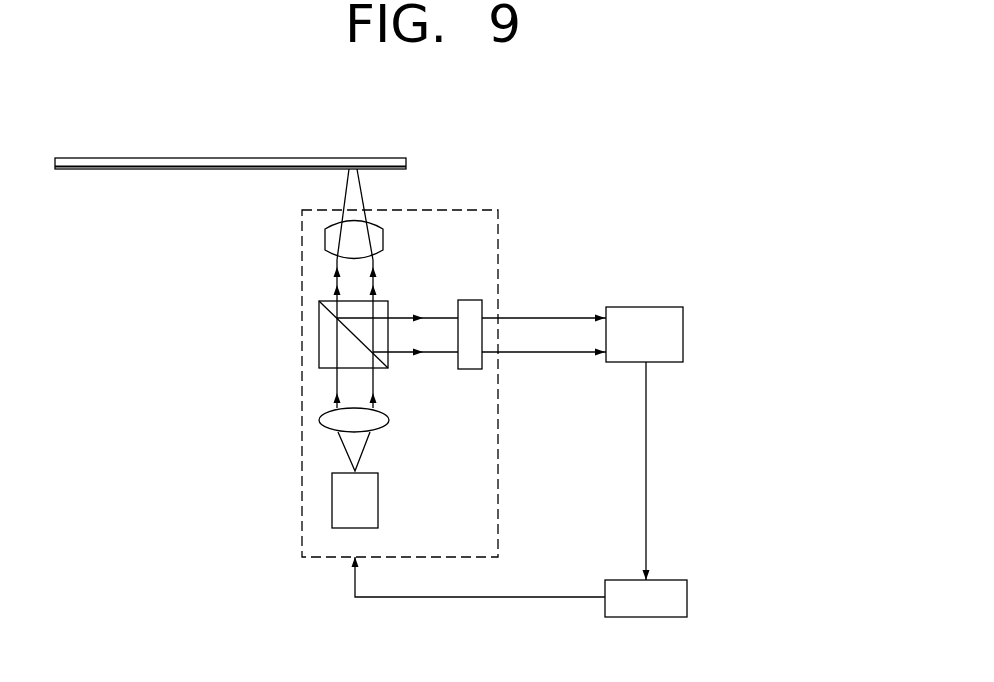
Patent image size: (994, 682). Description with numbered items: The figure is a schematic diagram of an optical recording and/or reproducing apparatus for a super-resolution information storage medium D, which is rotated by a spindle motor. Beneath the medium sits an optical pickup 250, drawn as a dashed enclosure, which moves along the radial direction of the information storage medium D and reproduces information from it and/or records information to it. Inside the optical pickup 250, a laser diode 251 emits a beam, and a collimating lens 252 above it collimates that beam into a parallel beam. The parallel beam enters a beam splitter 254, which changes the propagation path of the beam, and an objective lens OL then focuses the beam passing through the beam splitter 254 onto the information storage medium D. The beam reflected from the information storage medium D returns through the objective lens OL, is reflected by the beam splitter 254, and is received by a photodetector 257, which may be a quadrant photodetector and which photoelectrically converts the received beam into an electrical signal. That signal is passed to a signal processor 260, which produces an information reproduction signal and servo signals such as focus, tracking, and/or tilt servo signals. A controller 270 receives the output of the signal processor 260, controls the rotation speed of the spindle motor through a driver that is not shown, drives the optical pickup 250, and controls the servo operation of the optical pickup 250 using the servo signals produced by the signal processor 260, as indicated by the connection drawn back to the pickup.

The information storage medium D is at (219, 151).
The objective lens OL is at (325, 239).
The optical pickup 250 is at (290, 543).
The laser diode 251 is at (332, 495).
The collimating lens 252 is at (318, 420).
The beam splitter 254 is at (319, 330).
The photodetector 257 is at (468, 300).
The signal processor 260 is at (645, 307).
The controller 270 is at (687, 600).